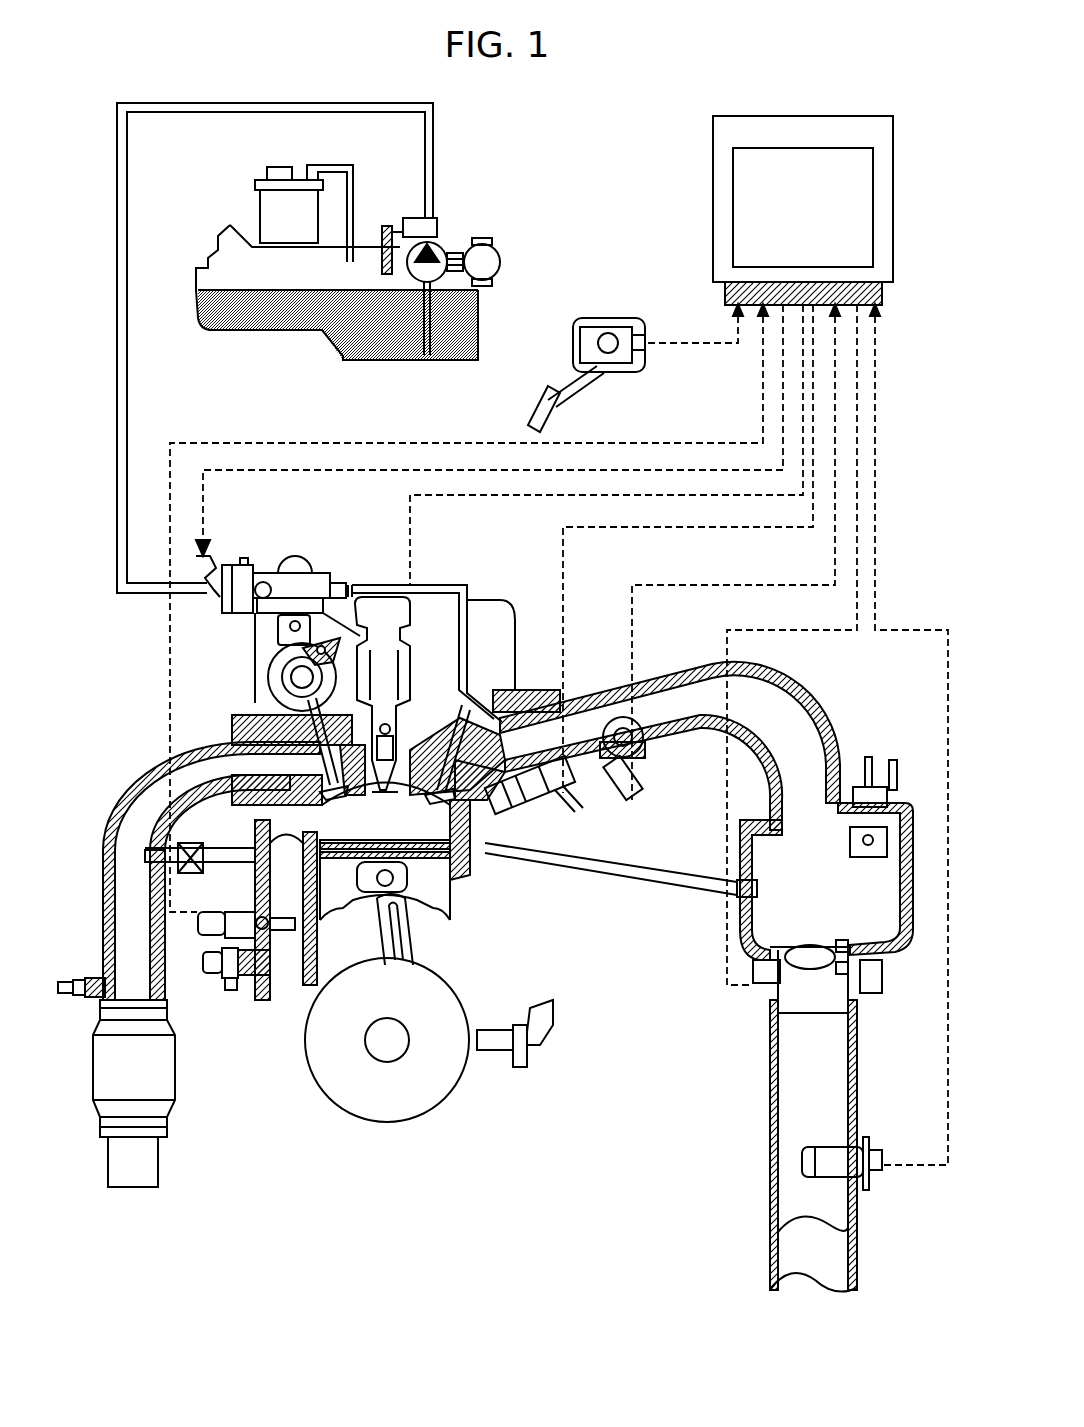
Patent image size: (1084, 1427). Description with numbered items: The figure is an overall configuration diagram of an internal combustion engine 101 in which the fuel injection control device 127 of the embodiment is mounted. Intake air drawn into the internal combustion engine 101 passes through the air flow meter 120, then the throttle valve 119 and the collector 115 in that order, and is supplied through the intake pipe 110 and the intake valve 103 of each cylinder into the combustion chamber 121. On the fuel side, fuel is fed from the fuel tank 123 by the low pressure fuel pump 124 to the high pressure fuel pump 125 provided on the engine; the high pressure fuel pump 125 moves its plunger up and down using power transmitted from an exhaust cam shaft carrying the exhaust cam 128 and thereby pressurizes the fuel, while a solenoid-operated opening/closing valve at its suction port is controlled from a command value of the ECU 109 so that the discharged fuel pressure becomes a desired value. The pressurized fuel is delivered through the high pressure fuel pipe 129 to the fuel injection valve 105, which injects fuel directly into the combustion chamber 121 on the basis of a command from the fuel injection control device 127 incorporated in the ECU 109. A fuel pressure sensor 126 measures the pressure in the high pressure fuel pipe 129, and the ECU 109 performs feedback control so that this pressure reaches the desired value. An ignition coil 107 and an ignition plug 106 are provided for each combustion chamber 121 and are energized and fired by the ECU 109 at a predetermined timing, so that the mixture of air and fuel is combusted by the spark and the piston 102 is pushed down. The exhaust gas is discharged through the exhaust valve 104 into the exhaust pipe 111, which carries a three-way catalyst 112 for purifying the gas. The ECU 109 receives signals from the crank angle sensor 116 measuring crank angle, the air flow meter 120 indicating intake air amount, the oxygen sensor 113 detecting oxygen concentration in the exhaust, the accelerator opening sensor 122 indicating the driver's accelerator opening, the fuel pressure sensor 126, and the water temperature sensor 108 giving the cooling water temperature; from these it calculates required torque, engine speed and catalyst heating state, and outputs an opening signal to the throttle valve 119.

The internal combustion engine 101 is at (488, 855).
The piston 102 is at (440, 903).
The intake valve 103 is at (437, 792).
The exhaust valve 104 is at (340, 790).
The fuel injection valve 105 is at (517, 800).
The ignition plug 106 is at (381, 792).
The ignition coil 107 is at (382, 598).
The water temperature sensor 108 is at (290, 940).
The ECU 109 is at (758, 167).
The intake pipe 110 is at (606, 685).
The exhaust pipe 111 is at (150, 772).
The three-way catalyst 112 is at (170, 1078).
The oxygen sensor 113 is at (80, 982).
The collector 115 is at (826, 858).
The crank angle sensor 116 is at (542, 1045).
The throttle valve 119 is at (872, 1000).
The air flow meter 120 is at (875, 1180).
The combustion chamber 121 is at (455, 882).
The accelerator opening sensor 122 is at (630, 318).
The fuel tank 123 is at (345, 325).
The low pressure fuel pump 124 is at (455, 252).
The high pressure fuel pump 125 is at (296, 560).
The fuel pressure sensor 126 is at (637, 797).
The fuel injection control device 127 is at (733, 207).
The exhaust cam 128 is at (268, 670).
The high pressure fuel pipe 129 is at (432, 588).